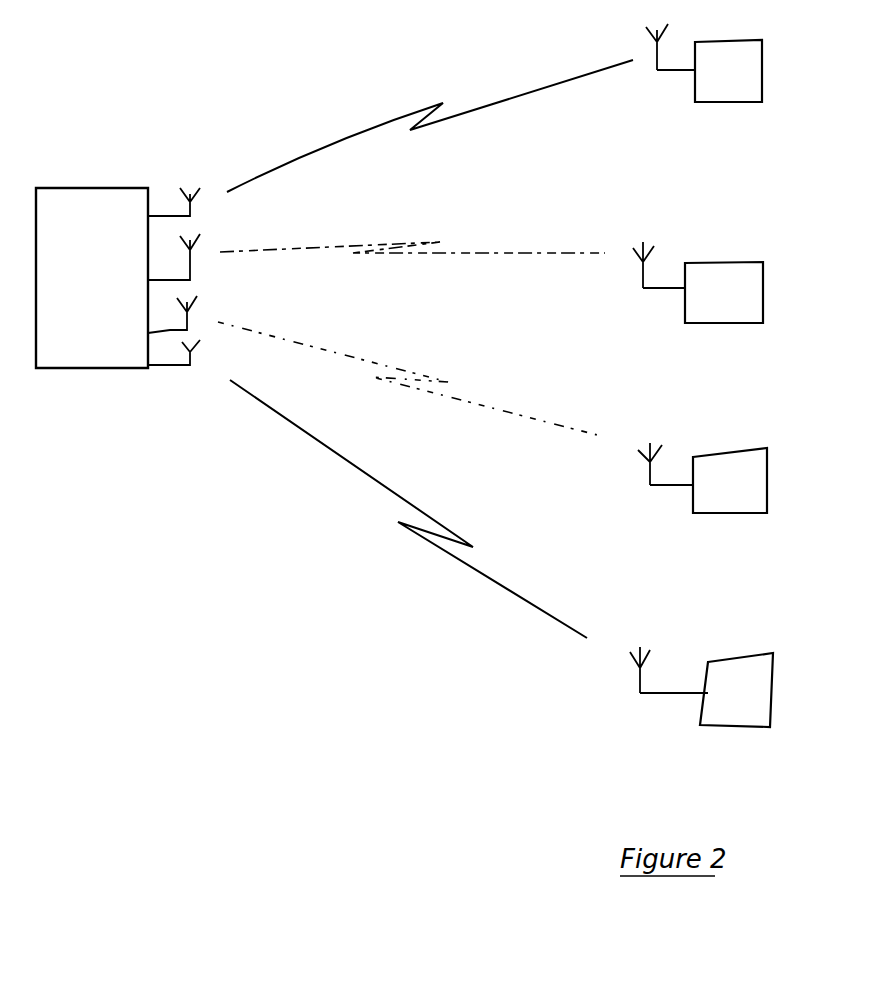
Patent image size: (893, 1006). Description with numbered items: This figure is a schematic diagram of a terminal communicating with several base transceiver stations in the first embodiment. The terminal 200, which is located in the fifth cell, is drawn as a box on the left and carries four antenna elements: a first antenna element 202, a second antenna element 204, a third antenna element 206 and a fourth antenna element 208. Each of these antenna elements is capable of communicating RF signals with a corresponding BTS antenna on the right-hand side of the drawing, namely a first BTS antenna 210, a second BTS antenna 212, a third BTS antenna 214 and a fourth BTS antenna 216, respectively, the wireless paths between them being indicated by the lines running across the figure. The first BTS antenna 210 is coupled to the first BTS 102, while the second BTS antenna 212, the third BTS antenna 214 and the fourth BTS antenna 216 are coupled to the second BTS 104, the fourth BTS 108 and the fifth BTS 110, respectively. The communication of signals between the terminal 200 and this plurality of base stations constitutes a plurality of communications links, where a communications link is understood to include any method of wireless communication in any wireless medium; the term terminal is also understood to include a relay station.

The terminal 200 is at (81, 368).
The first antenna element 202 is at (170, 214).
The second antenna element 204 is at (190, 280).
The third antenna element 206 is at (192, 330).
The fourth antenna element 208 is at (176, 368).
The first BTS 102 is at (735, 102).
The second BTS 104 is at (753, 323).
The fourth BTS 108 is at (750, 513).
The fifth BTS 110 is at (752, 727).
The first BTS antenna 210 is at (657, 70).
The second BTS antenna 212 is at (643, 288).
The third BTS antenna 214 is at (662, 485).
The fourth BTS antenna 216 is at (640, 693).